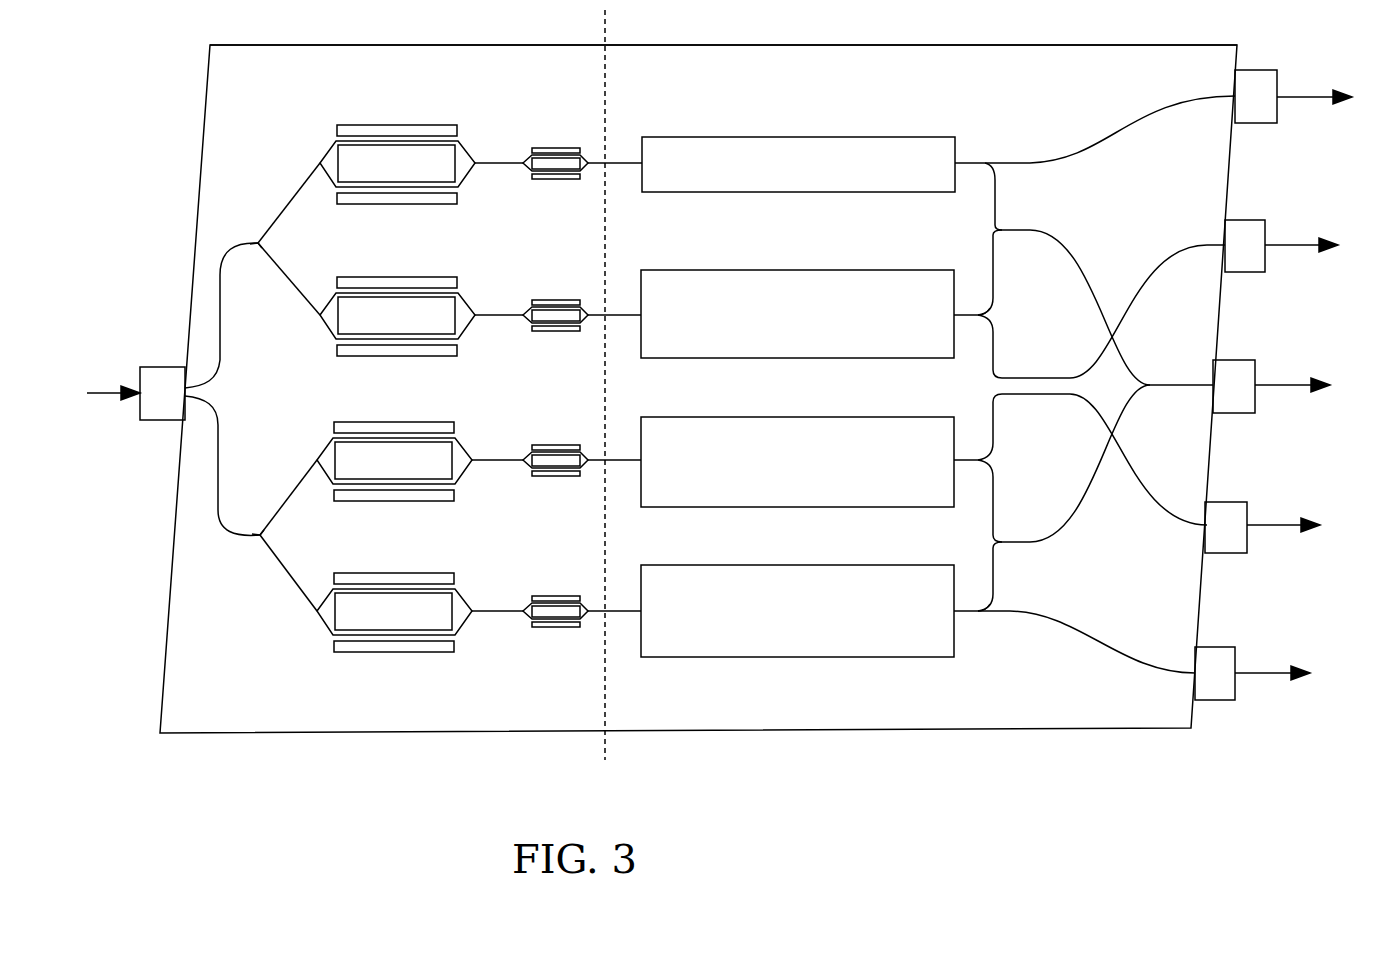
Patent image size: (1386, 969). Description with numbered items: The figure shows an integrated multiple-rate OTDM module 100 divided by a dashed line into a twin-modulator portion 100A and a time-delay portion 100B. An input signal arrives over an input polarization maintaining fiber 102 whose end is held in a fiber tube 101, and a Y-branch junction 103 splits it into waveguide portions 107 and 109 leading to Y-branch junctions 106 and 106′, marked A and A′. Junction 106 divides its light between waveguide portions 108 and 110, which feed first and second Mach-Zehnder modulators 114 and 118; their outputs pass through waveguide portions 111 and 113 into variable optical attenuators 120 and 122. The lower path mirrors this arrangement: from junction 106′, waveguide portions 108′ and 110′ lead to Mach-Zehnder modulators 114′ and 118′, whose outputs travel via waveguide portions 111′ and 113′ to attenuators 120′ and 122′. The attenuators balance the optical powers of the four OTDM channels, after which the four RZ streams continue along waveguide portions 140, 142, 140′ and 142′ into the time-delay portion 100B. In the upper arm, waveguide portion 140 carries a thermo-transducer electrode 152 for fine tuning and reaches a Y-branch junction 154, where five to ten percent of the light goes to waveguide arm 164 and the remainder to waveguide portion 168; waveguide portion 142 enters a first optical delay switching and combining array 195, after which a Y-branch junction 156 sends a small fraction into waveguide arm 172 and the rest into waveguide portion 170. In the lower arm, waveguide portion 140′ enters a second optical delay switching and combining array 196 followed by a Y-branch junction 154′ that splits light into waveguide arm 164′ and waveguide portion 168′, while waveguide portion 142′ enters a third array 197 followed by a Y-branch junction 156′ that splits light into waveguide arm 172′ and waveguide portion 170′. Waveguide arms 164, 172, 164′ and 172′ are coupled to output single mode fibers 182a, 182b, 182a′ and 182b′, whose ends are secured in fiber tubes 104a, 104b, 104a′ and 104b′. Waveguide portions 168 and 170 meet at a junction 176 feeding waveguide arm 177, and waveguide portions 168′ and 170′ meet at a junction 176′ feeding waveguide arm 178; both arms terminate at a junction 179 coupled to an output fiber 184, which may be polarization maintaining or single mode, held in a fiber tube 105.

The multiple-rate OTDM module 100 is at (895, 775).
The twin-modulator portion 100A is at (407, 29).
The time-delay portion 100B is at (921, 385).
The fiber tube 101 is at (160, 363).
The input polarization maintaining fiber 102 is at (103, 397).
The Y-branch junction 103 is at (193, 397).
The fiber tube 105 is at (1250, 414).
The Y-branch junction 106 is at (250, 240).
The Y-branch junction 106′ is at (252, 543).
The waveguide portion 107 is at (222, 275).
The waveguide portion 108 is at (297, 200).
The fiber to MZM B' 108′ is at (292, 495).
The waveguide portion 109 is at (220, 498).
The waveguide portion 110 is at (293, 286).
The fiber to MZM C' 110′ is at (284, 570).
The waveguide portion 111 is at (500, 166).
The MZM output fiber 111′ is at (497, 463).
The waveguide portion 113 is at (498, 317).
The MZM output fiber 113′ is at (497, 614).
The first Mach-Zehnder modulator 114 is at (356, 124).
The Mach-Zehnder modulator 114′ is at (356, 423).
The second Mach-Zehnder modulator 118 is at (358, 276).
The Mach-Zehnder modulator 118′ is at (353, 573).
The first variable optical attenuator 120 is at (565, 185).
The variable optical attenuator 120′ is at (567, 479).
The second variable optical attenuator 122 is at (565, 334).
The variable optical attenuator 122′ is at (567, 632).
The first waveguide portion 140 is at (628, 160).
The first waveguide portion 140′ is at (627, 458).
The second waveguide portion 142 is at (626, 312).
The second waveguide portion 142′ is at (627, 608).
The thermo-transducer 152 is at (755, 137).
The Y-branch junction 154 is at (963, 160).
The Y-branch junction 154′ is at (958, 460).
The Y-branch junction 156 is at (970, 317).
The Y-branch junction 156′ is at (970, 610).
The waveguide arm 164 is at (1093, 143).
The waveguide arm 164′ is at (1088, 404).
The waveguide portion 168 is at (997, 195).
The waveguide portion 168′ is at (997, 508).
The waveguide portion 170 is at (990, 255).
The waveguide portion 170′ is at (993, 553).
The waveguide arm 172 is at (1022, 377).
The waveguide arm 172′ is at (1077, 630).
The junction 176 is at (1022, 232).
The junction 176′ is at (1023, 547).
The waveguide arm 177 is at (1068, 247).
The waveguide arm 178 is at (1073, 525).
The junction 179 is at (1182, 383).
The optical delay switching and combining array 195 is at (755, 270).
The second optical delay switching and combining array 196 is at (753, 417).
The third optical delay switching and combining array 197 is at (753, 565).
The fiber tube 104a is at (1252, 125).
The fiber tube 104a′ is at (1223, 555).
The fiber tube 104b is at (1237, 273).
The fiber tube 104b′ is at (1215, 703).
The output single mode fiber 182a is at (1300, 100).
The output single mode fiber 182a′ is at (1275, 528).
The output single mode fiber 182b is at (1290, 249).
The output single mode fiber 182b′ is at (1268, 677).
The output PMF/SMF 184 is at (1292, 389).